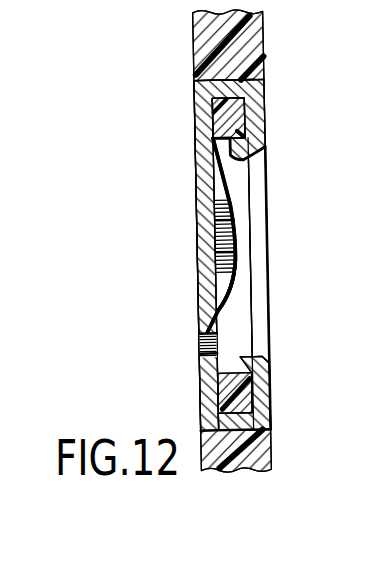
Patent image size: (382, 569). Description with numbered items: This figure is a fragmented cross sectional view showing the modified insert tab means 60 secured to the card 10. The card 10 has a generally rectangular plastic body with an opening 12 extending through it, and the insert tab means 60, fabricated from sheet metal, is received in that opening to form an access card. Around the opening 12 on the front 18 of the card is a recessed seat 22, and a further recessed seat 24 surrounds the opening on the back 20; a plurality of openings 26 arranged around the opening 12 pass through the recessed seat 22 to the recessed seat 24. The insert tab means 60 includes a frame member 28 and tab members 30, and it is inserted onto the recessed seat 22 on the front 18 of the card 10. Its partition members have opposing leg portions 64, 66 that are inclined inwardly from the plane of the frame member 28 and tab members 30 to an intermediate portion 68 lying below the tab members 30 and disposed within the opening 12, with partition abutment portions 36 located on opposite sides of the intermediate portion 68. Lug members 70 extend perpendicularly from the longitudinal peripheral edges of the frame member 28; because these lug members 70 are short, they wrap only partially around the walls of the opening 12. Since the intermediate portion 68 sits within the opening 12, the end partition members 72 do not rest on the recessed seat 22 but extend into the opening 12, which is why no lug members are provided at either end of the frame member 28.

The card 10 is at (187, 72).
The opening 12 is at (233, 343).
The front 18 is at (194, 79).
The back 20 is at (261, 70).
The recessed seat 22 is at (212, 128).
The further recessed seat 24 is at (247, 124).
The openings 26 is at (253, 97).
The frame member 28 is at (203, 383).
The tab members 30 is at (206, 297).
The partition abutment portions 36 is at (226, 246).
The insert tab means 60 is at (177, 207).
The leg portion 64 is at (249, 220).
The leg portion 66 is at (212, 273).
The intermediate portion 68 is at (236, 252).
The lug members 70 is at (252, 159).
The end partition members 72 is at (232, 205).